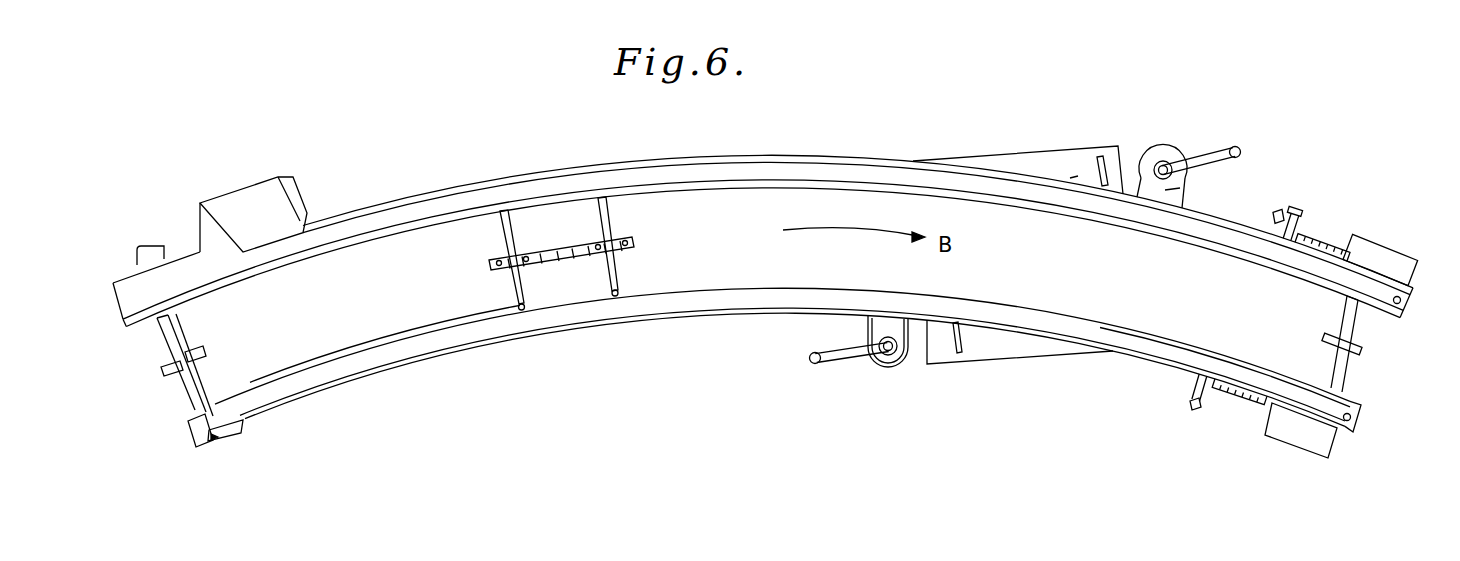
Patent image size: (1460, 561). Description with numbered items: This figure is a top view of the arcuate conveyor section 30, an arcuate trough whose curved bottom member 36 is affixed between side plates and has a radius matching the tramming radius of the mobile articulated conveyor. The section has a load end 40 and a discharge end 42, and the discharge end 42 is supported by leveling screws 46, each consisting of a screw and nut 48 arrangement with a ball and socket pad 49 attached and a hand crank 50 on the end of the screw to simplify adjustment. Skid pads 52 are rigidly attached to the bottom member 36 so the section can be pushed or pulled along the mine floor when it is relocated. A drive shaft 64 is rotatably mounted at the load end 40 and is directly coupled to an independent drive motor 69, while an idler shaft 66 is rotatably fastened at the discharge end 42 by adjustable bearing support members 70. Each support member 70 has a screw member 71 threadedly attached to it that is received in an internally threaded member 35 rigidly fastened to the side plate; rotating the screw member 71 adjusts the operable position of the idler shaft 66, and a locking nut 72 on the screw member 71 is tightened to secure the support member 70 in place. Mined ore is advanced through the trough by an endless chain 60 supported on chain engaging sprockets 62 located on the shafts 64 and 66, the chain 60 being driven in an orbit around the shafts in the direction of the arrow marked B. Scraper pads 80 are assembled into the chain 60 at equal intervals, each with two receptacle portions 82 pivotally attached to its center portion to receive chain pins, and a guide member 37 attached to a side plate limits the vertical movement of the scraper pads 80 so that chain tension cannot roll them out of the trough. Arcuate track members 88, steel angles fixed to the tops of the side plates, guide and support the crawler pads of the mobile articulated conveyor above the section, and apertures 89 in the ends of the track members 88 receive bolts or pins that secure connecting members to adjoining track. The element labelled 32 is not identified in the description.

The conveyor section 30 is at (307, 404).
The lower rail flange 32 is at (1146, 368).
The internally threaded member 35 is at (1297, 208).
The bottom member 36 is at (1082, 273).
The guide member 37 is at (768, 180).
The load end 40 is at (148, 352).
The discharge end 42 is at (1375, 386).
The leveling screw 46 is at (1139, 138).
The nut 48 is at (1170, 192).
The ball and socket pad 49 is at (1162, 150).
The hand crank 50 is at (1205, 152).
The skid pad 52 is at (1017, 158).
The endless chain 60 is at (568, 262).
The chain engaging sprocket 62 is at (165, 362).
The drive shaft 64 is at (183, 403).
The idler shaft 66 is at (1350, 332).
The drive motor 69 is at (253, 210).
The adjustable bearing support member 70 is at (1383, 256).
The screw member 71 is at (1320, 230).
The locking nut 72 is at (1277, 229).
The scraper pad 80 is at (515, 280).
The receptacle portion 82 is at (530, 250).
The arcuate track member 88 is at (595, 177).
The aperture 89 is at (1392, 318).